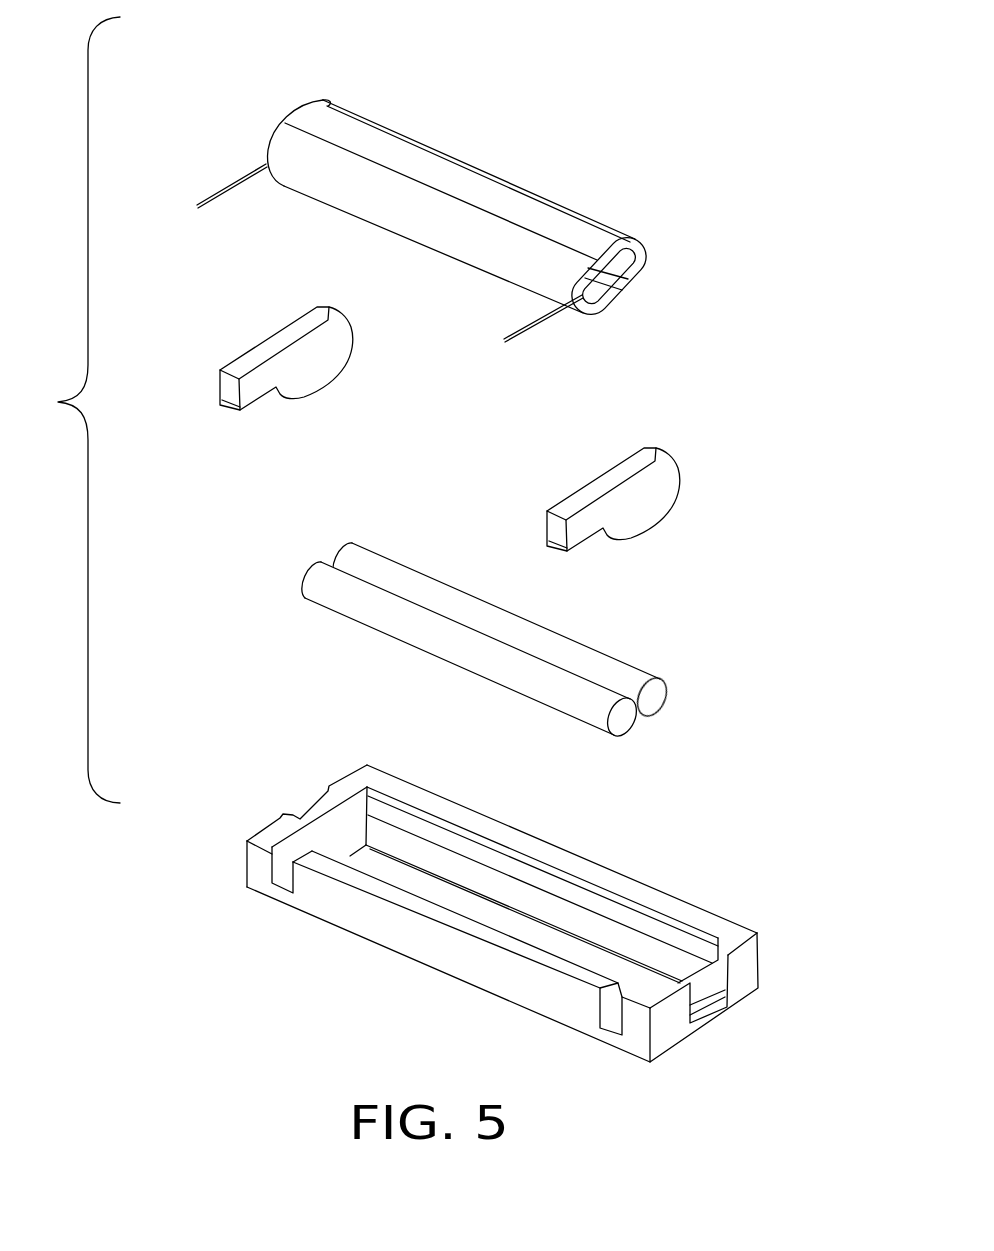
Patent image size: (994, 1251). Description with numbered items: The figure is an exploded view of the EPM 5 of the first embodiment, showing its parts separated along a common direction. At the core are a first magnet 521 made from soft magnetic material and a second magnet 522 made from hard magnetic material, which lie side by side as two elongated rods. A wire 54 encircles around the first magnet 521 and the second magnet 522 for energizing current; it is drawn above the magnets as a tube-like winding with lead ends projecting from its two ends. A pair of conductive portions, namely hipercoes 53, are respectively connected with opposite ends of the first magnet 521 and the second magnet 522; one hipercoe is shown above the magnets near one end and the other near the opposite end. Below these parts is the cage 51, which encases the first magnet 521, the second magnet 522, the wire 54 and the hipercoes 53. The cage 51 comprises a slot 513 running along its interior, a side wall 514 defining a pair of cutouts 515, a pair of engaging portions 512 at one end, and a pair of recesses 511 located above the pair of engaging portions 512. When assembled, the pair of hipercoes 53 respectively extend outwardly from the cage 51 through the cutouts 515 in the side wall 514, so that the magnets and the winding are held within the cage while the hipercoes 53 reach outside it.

The EPM 5 is at (76, 410).
The cage 51 is at (477, 922).
The recesses 511 is at (698, 982).
The engaging portions 512 is at (705, 1008).
The slot 513 is at (470, 888).
The side wall 514 is at (375, 917).
The cutouts 515 is at (287, 884).
The first magnet 521 is at (352, 560).
The second magnet 522 is at (318, 588).
The hipercoes 53 is at (288, 333).
The wire 54 is at (318, 125).